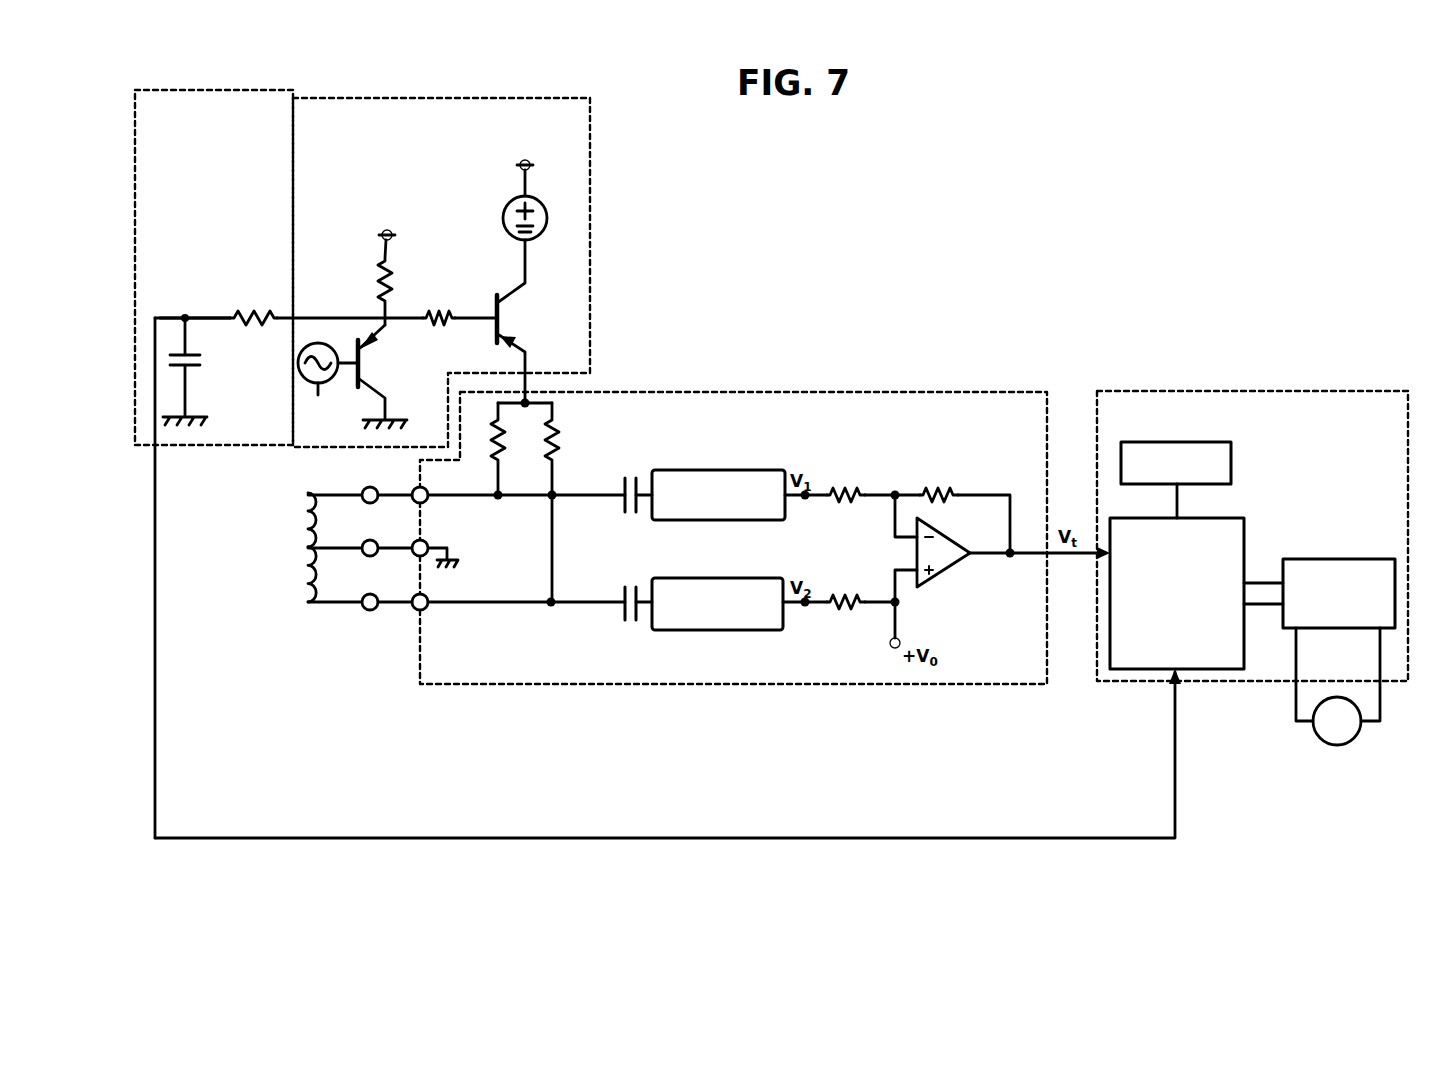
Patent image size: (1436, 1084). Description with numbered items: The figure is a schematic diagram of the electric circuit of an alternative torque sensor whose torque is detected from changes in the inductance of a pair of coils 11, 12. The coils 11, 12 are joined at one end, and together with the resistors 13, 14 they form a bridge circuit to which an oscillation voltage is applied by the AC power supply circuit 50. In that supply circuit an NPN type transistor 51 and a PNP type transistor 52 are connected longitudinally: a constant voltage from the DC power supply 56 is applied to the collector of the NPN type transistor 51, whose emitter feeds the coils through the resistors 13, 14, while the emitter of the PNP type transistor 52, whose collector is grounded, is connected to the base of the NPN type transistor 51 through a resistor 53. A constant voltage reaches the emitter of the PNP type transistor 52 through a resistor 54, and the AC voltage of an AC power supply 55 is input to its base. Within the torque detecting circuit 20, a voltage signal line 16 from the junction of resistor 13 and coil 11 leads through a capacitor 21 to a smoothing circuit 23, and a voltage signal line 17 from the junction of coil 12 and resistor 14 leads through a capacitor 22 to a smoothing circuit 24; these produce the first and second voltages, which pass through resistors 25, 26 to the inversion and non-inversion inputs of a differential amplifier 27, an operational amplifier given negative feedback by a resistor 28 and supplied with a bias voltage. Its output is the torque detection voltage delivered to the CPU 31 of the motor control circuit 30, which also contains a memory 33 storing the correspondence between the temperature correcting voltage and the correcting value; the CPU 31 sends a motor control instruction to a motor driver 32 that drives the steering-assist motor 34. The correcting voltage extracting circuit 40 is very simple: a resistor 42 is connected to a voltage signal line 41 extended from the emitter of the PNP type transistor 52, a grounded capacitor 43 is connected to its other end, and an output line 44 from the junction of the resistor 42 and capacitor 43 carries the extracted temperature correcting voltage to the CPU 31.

The coil 11 is at (308, 493).
The coil 12 is at (308, 603).
The resistor 13 is at (498, 450).
The resistor 14 is at (552, 428).
The voltage signal line 16 is at (590, 493).
The voltage signal line 17 is at (572, 606).
The torque detecting circuit 20 is at (995, 390).
The capacitor 21 is at (625, 478).
The capacitor 22 is at (625, 622).
The smoothing circuit 23 is at (722, 470).
The smoothing circuit 24 is at (720, 578).
The resistor 25 is at (848, 487).
The resistor 26 is at (848, 595).
The differential amplifier 27 is at (948, 575).
The resistor 28 is at (943, 487).
The motor control circuit 30 is at (1255, 390).
The CPU 31 is at (1244, 522).
The motor driver 32 is at (1342, 559).
The memory 33 is at (1231, 451).
The motor 34 is at (1337, 745).
The correcting voltage extracting circuit 40 is at (258, 88).
The voltage signal line 41 is at (277, 313).
The resistor 42 is at (237, 313).
The capacitor 43 is at (192, 368).
The output line 44 is at (638, 838).
The AC power supply circuit 50 is at (592, 238).
The NPN type transistor 51 is at (527, 326).
The PNP type transistor 52 is at (386, 368).
The resistor 53 is at (438, 313).
The resistor 54 is at (383, 293).
The AC power supply 55 is at (318, 395).
The DC power supply 56 is at (503, 218).